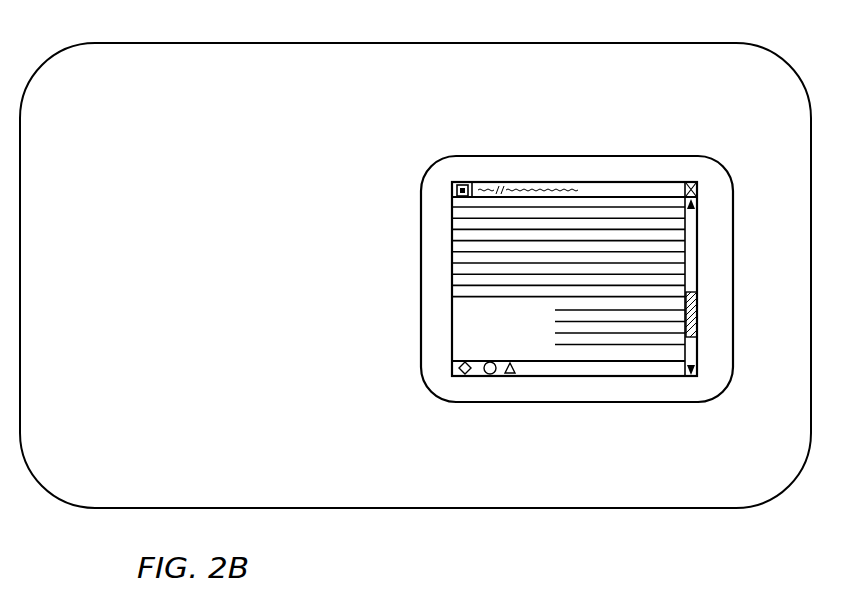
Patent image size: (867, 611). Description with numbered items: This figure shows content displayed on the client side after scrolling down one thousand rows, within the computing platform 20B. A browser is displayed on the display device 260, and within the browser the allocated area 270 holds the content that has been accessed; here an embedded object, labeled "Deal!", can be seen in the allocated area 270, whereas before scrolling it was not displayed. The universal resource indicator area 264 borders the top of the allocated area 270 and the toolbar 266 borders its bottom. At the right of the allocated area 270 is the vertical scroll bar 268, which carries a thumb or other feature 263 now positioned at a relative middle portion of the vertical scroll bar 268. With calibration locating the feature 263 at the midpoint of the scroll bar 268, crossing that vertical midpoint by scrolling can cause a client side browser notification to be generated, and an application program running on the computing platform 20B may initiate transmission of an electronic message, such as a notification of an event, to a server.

The computing platform 20B is at (124, 31).
The display device 260 is at (420, 362).
The feature 263 is at (697, 298).
The universal resource indicator area 264 is at (551, 185).
The toolbar 266 is at (540, 370).
The vertical scroll bar 268 is at (697, 355).
The allocated area 270 is at (564, 232).